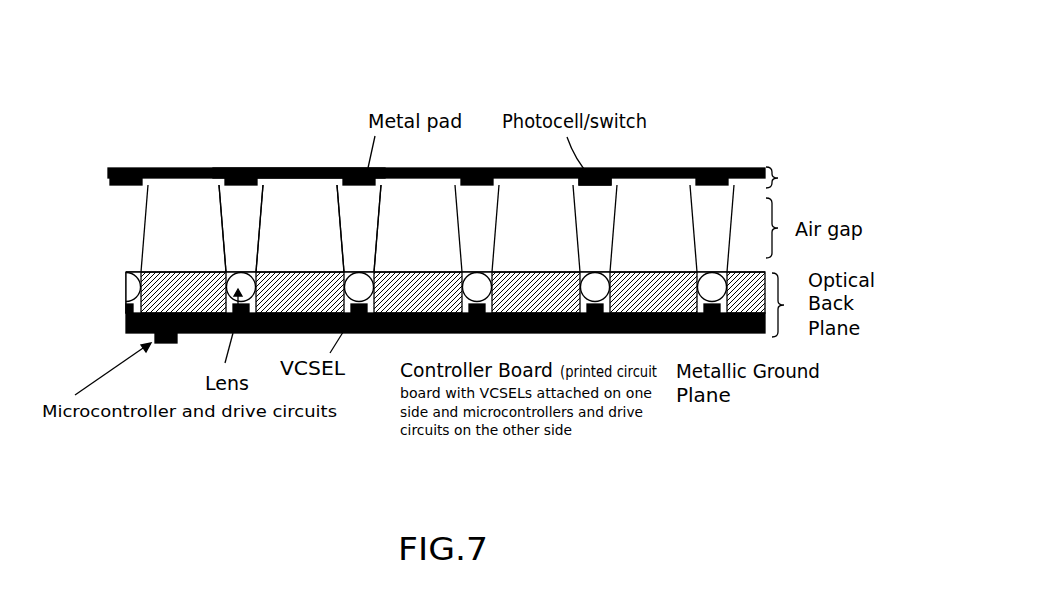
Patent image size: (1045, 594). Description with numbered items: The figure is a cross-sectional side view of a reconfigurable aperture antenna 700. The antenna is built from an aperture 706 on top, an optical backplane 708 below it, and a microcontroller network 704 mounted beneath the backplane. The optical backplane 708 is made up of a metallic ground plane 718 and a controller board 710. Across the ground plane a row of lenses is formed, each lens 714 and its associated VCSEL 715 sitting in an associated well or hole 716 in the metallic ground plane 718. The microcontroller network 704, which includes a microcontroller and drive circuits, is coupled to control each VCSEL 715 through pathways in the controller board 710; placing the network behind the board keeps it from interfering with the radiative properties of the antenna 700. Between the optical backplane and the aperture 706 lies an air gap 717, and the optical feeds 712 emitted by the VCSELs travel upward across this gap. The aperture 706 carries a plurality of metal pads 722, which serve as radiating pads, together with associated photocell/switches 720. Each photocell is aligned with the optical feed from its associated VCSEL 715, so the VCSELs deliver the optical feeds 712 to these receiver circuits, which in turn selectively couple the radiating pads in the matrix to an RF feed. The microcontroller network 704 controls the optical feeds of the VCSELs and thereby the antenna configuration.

The reconfigurable aperture antenna 700 is at (730, 81).
The microcontroller network 704 is at (172, 343).
The aperture 706 is at (760, 168).
The optical backplane 708 is at (505, 324).
The controller board 710 is at (529, 322).
The optical feeds 712 is at (240, 230).
The lens 714 is at (241, 283).
The VCSEL 715 is at (372, 313).
The well 716 is at (374, 272).
The air gap 717 is at (745, 228).
The metallic ground plane 718 is at (653, 291).
The photocell/switches 720 is at (610, 182).
The metal pads 722 is at (348, 168).